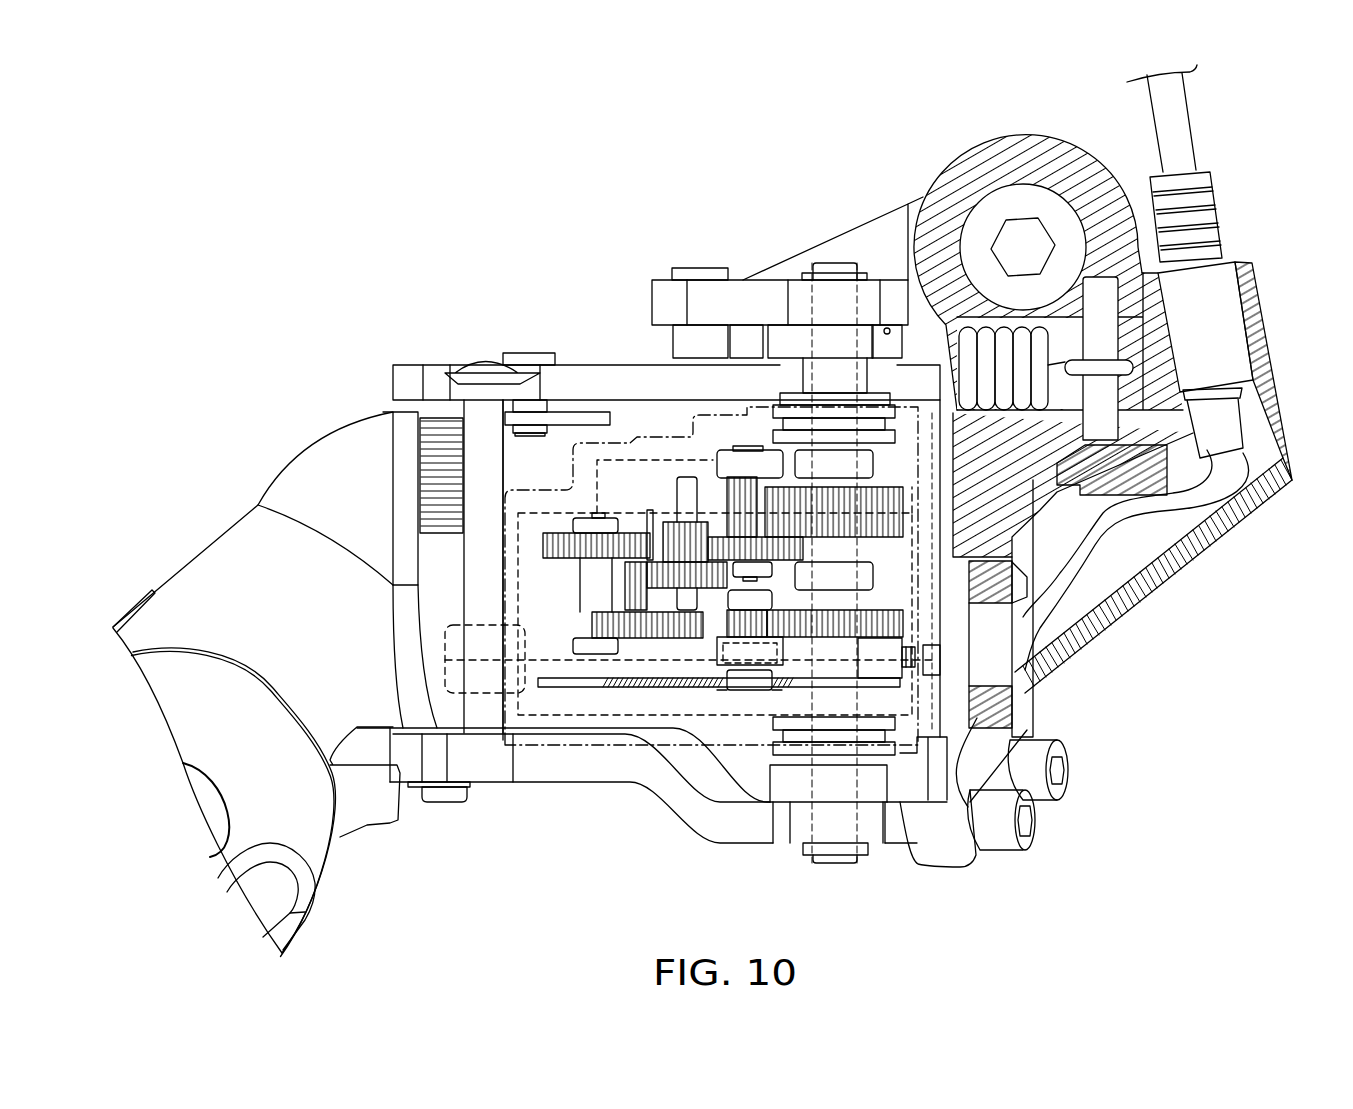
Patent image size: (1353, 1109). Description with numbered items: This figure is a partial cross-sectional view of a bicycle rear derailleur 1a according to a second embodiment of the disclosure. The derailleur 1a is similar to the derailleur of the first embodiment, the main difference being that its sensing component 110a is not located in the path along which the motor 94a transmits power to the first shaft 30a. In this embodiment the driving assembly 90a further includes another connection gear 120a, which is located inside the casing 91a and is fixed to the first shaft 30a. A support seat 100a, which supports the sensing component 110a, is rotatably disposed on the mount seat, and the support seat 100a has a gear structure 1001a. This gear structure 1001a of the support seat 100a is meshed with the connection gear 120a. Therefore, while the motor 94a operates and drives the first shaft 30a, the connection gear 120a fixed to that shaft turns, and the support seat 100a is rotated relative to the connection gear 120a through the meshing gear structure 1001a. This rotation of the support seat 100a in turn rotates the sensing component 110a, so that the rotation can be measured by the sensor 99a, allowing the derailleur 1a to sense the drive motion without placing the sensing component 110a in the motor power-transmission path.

The bicycle rear derailleur 1a is at (316, 313).
The driving assembly 90a is at (543, 474).
The casing 91a is at (587, 443).
The motor 94a is at (665, 472).
The first shaft 30a is at (850, 598).
The connection gear 120a is at (887, 622).
The gear structure 1001a is at (733, 625).
The support seat 100a is at (717, 653).
The sensing component 110a is at (743, 653).
The sensor 99a is at (750, 682).